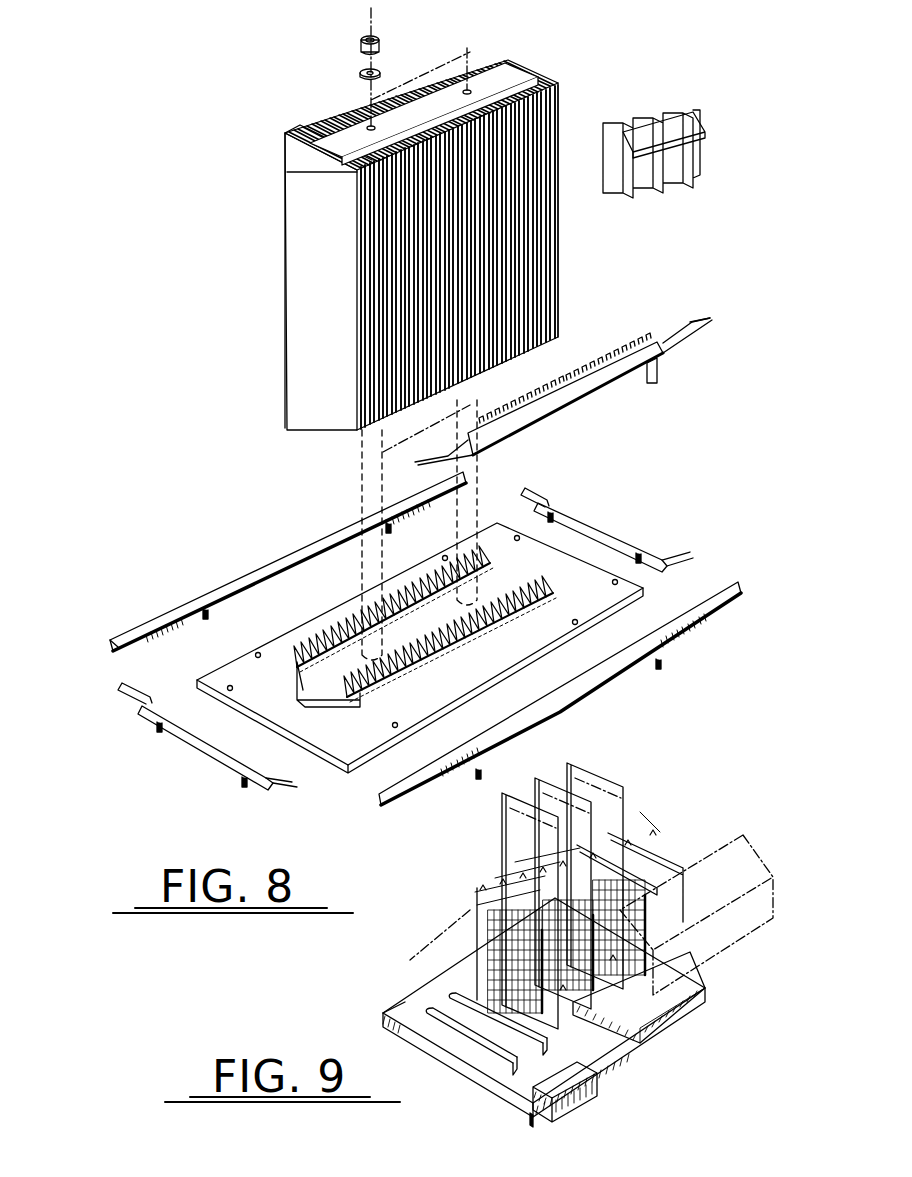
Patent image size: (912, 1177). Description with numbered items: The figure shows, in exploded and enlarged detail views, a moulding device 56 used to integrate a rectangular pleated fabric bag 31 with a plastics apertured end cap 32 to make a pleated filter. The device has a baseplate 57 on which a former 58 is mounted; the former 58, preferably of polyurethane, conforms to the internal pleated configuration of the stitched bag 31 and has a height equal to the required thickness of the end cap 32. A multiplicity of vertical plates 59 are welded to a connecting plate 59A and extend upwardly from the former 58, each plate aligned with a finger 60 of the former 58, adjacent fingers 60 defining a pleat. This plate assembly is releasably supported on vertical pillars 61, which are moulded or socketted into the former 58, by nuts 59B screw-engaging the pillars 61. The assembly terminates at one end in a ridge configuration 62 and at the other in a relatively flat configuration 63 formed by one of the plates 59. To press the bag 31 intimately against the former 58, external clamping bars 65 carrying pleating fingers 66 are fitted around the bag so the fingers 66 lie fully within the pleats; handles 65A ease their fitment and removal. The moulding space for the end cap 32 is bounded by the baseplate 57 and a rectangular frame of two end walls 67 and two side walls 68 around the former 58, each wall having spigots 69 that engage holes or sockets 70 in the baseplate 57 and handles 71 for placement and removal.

In FIG. 9, the pleated fabric bag 31 is at (495, 960).
In FIG. 9, the apertured end cap 32 is at (680, 983).
In FIG. 8, the moulding device 56 is at (270, 490).
In FIG. 9, the moulding device 56 is at (455, 915).
In FIG. 8, the baseplate 57 is at (348, 740).
In FIG. 9, the baseplate 57 is at (662, 1058).
In FIG. 8, the former 58 is at (307, 680).
In FIG. 9, the former 58 is at (407, 1017).
In FIG. 8, the vertical plates 59 is at (537, 160).
In FIG. 9, the vertical plates 59 is at (618, 783).
In FIG. 8, the connecting plate 59A is at (512, 82).
In FIG. 8, the nuts 59B is at (352, 45).
In FIG. 8, the fingers 60 is at (342, 642).
In FIG. 9, the fingers 60 is at (457, 1078).
In FIG. 8, the vertical pillars 61 is at (467, 408).
In FIG. 8, the ridge configuration 62 is at (320, 328).
In FIG. 8, the relatively flat configuration 63 is at (470, 313).
In FIG. 8, the external clamping bars 65 is at (598, 392).
In FIG. 9, the external clamping bars 65 is at (733, 898).
In FIG. 8, the handles 65A is at (693, 318).
In FIG. 8, the pleating fingers 66 is at (637, 335).
In FIG. 9, the pleating fingers 66 is at (672, 857).
In FIG. 8, the end walls 67 is at (208, 755).
In FIG. 8, the side walls 68 is at (263, 583).
In FIG. 9, the side walls 68 is at (603, 1097).
In FIG. 8, the spigots 69 is at (387, 530).
In FIG. 9, the spigots 69 is at (530, 1125).
In FIG. 8, the holes or sockets 70 is at (250, 655).
In FIG. 8, the handles 71 is at (117, 648).